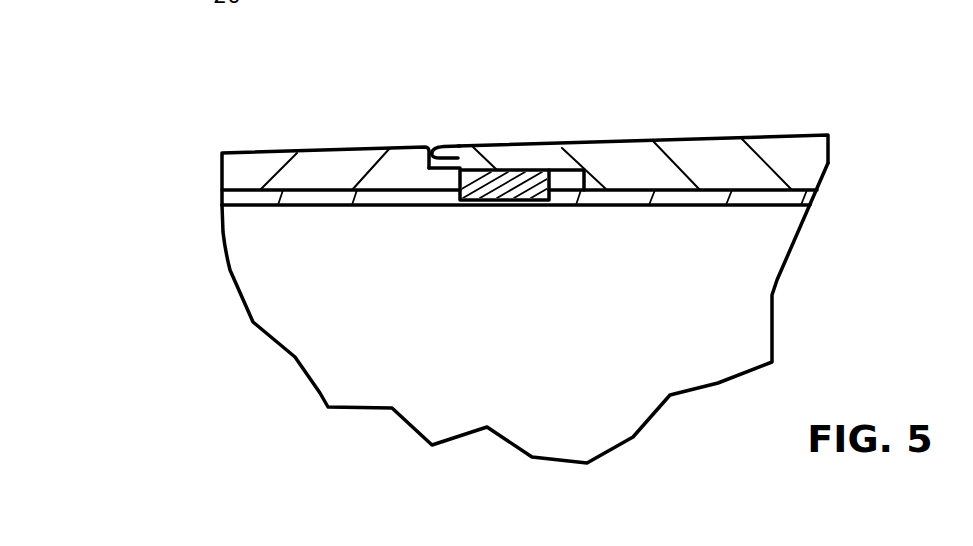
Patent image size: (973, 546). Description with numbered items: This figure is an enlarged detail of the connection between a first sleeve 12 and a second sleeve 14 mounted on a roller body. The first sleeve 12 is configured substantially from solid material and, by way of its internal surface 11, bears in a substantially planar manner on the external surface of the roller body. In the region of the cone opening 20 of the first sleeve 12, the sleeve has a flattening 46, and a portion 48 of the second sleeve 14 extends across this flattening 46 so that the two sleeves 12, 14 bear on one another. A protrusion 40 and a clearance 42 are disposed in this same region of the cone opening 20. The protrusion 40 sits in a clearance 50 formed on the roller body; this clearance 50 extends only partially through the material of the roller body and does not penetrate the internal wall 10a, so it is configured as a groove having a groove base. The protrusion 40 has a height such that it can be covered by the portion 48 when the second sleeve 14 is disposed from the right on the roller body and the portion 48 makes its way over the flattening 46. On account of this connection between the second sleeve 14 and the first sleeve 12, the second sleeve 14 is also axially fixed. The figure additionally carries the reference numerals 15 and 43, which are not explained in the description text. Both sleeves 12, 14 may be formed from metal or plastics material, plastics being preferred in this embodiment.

The internal wall 10a is at (571, 214).
The internal surface 11 is at (255, 210).
The first sleeve 12 is at (340, 175).
The second sleeve 14 is at (718, 160).
The second layer portion 15 is at (760, 210).
The cone opening 20 is at (424, 107).
The protrusion 40 is at (484, 192).
The clearance 42 is at (456, 181).
The recess wall 43 is at (577, 160).
The flattening 46 is at (453, 160).
The portion 48 is at (551, 137).
The clearance 50 is at (519, 202).